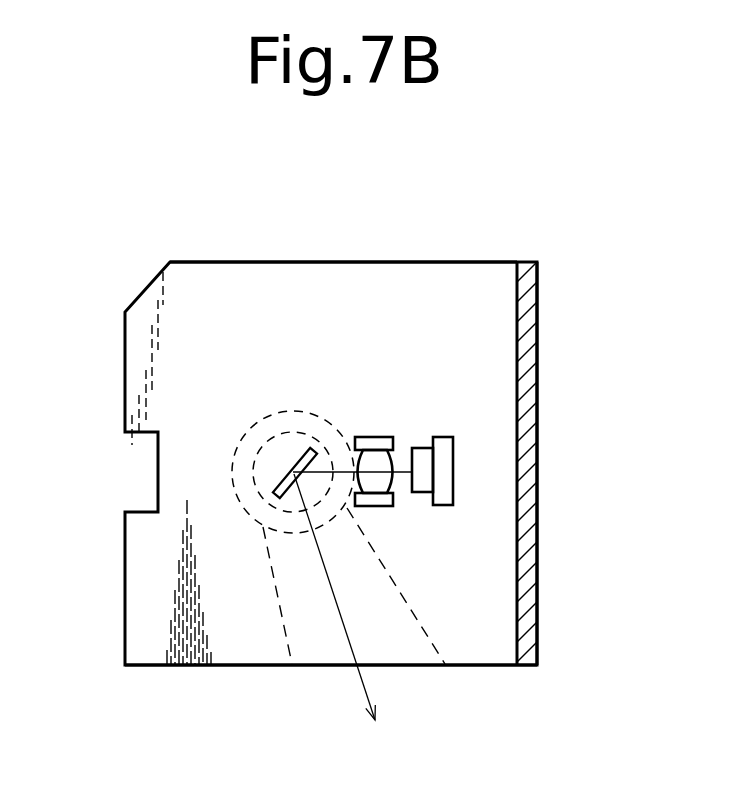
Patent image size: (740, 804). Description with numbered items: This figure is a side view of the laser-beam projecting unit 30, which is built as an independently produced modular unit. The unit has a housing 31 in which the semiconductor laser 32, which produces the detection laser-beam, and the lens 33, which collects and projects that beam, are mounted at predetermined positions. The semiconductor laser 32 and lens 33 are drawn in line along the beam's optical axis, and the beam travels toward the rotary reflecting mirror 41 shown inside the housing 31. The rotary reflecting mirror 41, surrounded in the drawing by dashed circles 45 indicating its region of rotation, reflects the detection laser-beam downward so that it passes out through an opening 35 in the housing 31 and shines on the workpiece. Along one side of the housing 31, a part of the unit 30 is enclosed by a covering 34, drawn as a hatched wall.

The laser-beam projecting unit 30 is at (503, 256).
The housing 31 is at (336, 262).
The semiconductor laser 32 is at (423, 448).
The lens 33 is at (372, 437).
The covering 34 is at (537, 333).
The opening 35 is at (413, 665).
The rotary reflecting mirror 41 is at (304, 434).
The mirror rotation region 45 is at (266, 440).